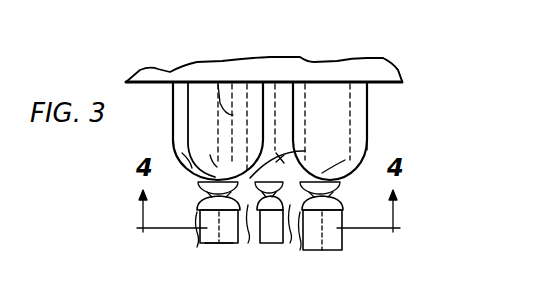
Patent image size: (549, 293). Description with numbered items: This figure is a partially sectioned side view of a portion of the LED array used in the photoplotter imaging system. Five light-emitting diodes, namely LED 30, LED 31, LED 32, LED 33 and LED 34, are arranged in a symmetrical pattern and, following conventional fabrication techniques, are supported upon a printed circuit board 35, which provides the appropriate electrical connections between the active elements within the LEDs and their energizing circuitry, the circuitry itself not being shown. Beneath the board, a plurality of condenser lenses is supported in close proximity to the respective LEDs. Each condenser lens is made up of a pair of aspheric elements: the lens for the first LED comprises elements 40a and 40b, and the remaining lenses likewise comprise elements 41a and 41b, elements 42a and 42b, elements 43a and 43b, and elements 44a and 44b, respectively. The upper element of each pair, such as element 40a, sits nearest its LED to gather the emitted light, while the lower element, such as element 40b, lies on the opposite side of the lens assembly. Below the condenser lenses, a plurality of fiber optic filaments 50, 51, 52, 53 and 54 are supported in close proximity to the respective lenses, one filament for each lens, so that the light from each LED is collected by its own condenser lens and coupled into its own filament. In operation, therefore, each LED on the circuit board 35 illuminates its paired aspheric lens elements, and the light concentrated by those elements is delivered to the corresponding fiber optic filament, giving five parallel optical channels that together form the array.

The LED 30 is at (218, 90).
The LED 31 is at (293, 121).
The LED 32 is at (186, 80).
The LED 33 is at (173, 97).
The LED 34 is at (353, 92).
The printed circuit board 35 is at (293, 70).
The aspheric element 40a is at (311, 151).
The aspheric element 40b is at (248, 243).
The aspheric element 41a is at (372, 167).
The aspheric element 41b is at (343, 197).
The aspheric element 42a is at (210, 155).
The aspheric element 42b is at (208, 228).
The aspheric element 43a is at (182, 153).
The aspheric element 43b is at (195, 200).
The aspheric element 44a is at (345, 160).
The aspheric element 44b is at (272, 240).
The fiber optic filament 50 is at (268, 243).
The fiber optic filament 51 is at (340, 246).
The fiber optic filament 52 is at (230, 243).
The fiber optic filament 53 is at (202, 243).
The fiber optic filament 54 is at (313, 248).